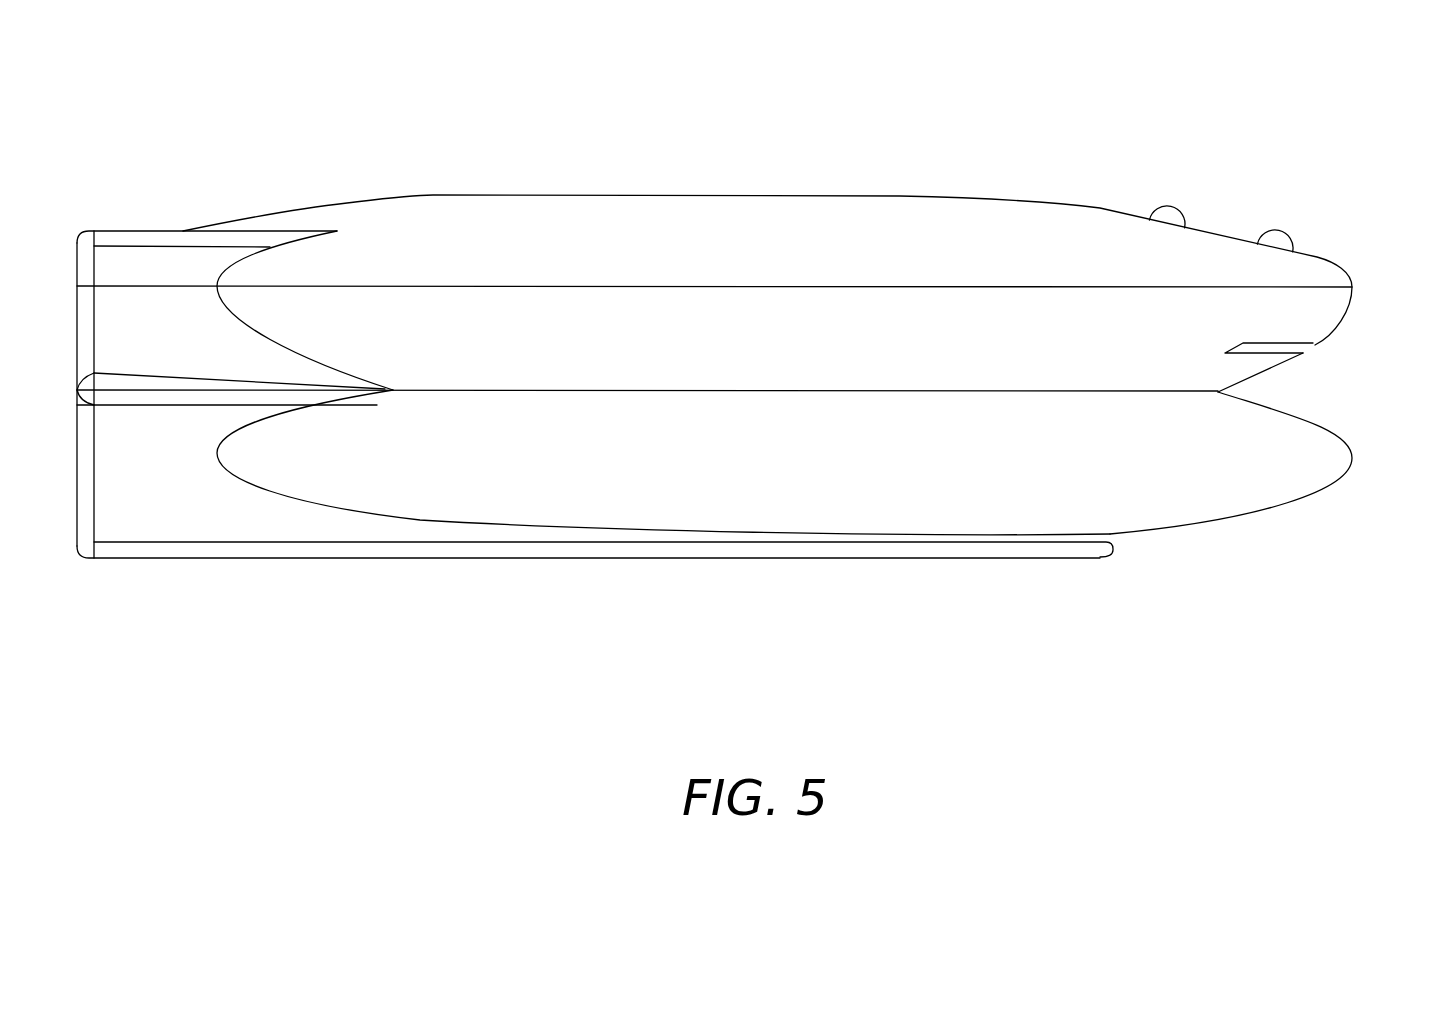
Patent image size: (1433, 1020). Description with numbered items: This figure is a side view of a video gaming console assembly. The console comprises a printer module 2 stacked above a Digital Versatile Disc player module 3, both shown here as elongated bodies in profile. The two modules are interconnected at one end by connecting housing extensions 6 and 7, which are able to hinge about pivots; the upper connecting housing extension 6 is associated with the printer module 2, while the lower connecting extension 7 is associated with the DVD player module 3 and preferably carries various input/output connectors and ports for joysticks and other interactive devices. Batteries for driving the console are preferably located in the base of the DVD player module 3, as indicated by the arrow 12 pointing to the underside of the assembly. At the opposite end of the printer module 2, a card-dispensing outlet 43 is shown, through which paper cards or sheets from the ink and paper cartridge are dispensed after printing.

The printer module 2 is at (606, 240).
The DVD player module 3 is at (1263, 420).
The connecting housing extension 6 is at (115, 335).
The lower connecting extension 7 is at (112, 475).
The arrow indicating battery location 12 is at (762, 562).
The card-dispensing outlet 43 is at (1298, 345).